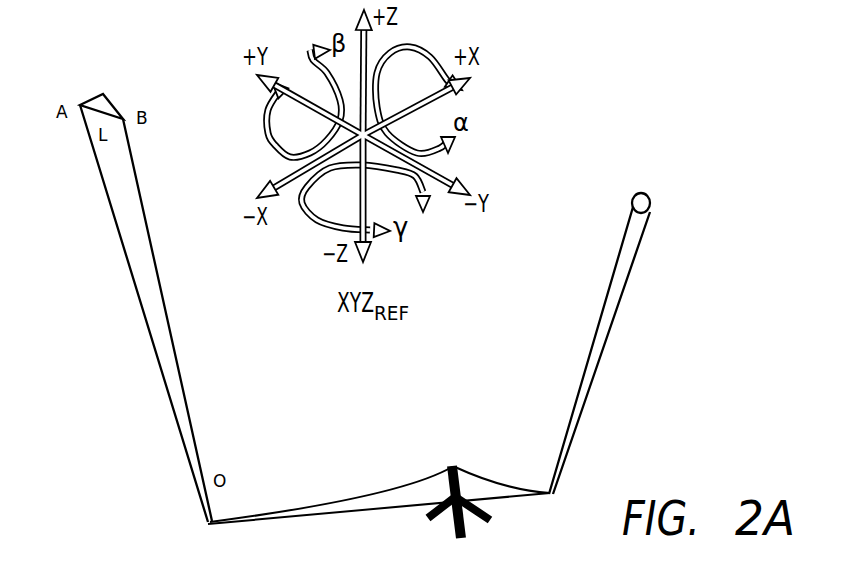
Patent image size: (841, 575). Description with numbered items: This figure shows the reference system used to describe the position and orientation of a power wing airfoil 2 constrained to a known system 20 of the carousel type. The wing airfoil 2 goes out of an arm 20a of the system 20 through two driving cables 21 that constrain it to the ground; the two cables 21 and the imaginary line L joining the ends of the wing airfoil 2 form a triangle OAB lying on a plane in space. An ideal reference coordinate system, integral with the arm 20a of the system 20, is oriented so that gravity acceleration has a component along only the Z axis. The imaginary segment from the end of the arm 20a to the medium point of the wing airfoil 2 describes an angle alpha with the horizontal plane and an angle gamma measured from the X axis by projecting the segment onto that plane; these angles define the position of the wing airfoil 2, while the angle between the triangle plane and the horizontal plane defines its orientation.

The wing airfoil 2 is at (103, 94).
The driving cables 21 is at (108, 197).
The system of the carousel type 20 is at (452, 523).
The arm 20a is at (285, 515).